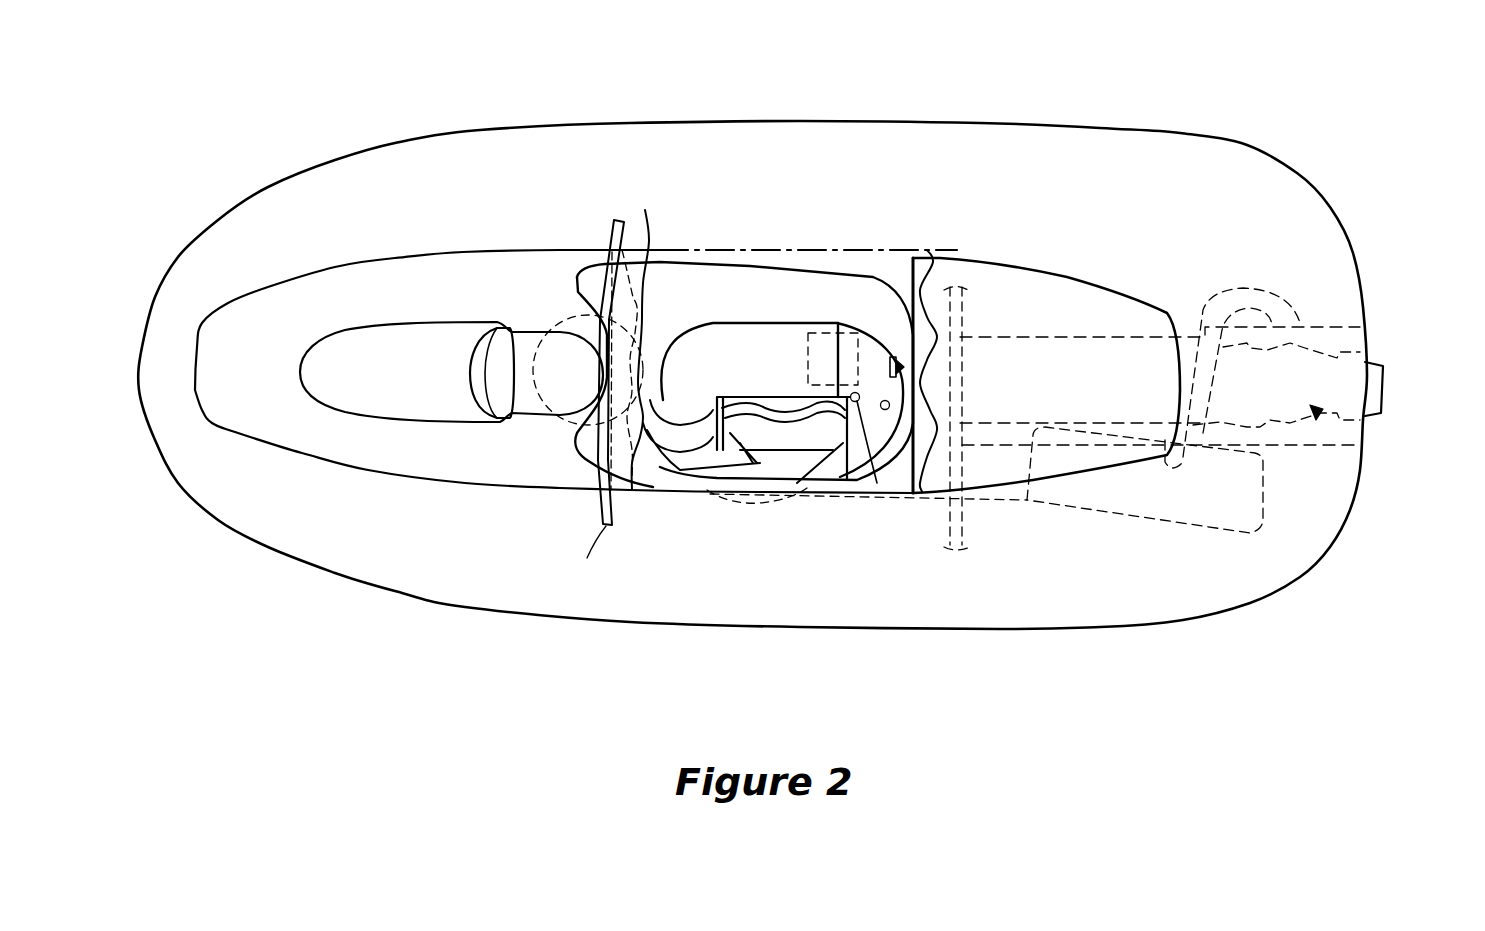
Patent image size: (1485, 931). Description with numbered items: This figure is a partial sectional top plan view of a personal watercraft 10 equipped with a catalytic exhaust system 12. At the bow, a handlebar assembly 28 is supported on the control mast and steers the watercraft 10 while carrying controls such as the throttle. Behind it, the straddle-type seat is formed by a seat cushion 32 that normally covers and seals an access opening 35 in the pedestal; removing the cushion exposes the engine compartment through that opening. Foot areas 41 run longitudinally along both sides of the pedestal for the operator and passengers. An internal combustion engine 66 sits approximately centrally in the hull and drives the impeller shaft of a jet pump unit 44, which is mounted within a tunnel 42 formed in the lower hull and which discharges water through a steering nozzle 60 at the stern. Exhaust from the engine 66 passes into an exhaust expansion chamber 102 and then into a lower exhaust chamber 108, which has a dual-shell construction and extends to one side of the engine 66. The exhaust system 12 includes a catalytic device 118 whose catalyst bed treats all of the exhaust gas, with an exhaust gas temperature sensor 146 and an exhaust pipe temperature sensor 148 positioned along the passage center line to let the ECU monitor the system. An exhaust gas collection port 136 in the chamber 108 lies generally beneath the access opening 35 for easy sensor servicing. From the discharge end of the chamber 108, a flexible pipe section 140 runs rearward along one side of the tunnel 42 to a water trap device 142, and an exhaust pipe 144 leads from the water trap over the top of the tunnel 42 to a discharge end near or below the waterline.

The personal watercraft 10 is at (384, 128).
The exhaust system 12 is at (728, 347).
The handlebar assembly 28 is at (587, 558).
The seat cushion 32 is at (1052, 303).
The access opening 35 is at (741, 268).
The foot areas 41 is at (858, 148).
The tunnel 42 is at (1131, 336).
The jet pump unit 44 is at (1316, 414).
The steering nozzle 60 is at (1375, 378).
The internal combustion engine 66 is at (836, 462).
The exhaust expansion chamber 102 is at (623, 331).
The lower exhaust chamber 108 is at (877, 483).
The catalytic device 118 is at (808, 360).
The exhaust gas collection port 136 is at (886, 410).
The flexible pipe section 140 is at (987, 507).
The water trap device 142 is at (1128, 530).
The exhaust pipe 144 is at (1222, 295).
The exhaust gas temperature sensor 146 is at (857, 395).
The exhaust pipe temperature sensor 148 is at (913, 258).